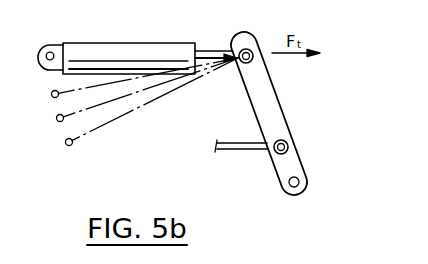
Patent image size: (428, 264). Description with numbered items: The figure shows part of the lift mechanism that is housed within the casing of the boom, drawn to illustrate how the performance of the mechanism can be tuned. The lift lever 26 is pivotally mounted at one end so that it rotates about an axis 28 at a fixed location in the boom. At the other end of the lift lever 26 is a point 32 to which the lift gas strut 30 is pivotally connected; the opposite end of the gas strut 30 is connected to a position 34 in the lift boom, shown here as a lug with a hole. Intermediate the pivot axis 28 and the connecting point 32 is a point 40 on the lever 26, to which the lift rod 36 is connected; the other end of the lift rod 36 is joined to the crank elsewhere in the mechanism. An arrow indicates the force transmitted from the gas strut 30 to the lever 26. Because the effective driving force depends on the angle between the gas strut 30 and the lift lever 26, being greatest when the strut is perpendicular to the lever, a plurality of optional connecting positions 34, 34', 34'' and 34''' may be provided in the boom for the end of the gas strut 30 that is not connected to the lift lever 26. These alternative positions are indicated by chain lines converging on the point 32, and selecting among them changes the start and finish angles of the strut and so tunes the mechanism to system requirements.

The lift lever 26 is at (271, 106).
The axis 28 is at (301, 184).
The lift gas strut 30 is at (121, 47).
The point 32 is at (247, 33).
The position 34 is at (49, 36).
The optional connecting position 34' is at (123, 78).
The optional connecting position 34'' is at (125, 95).
The optional connecting position 34''' is at (131, 112).
The lift rod 36 is at (243, 153).
The point 40 is at (291, 149).